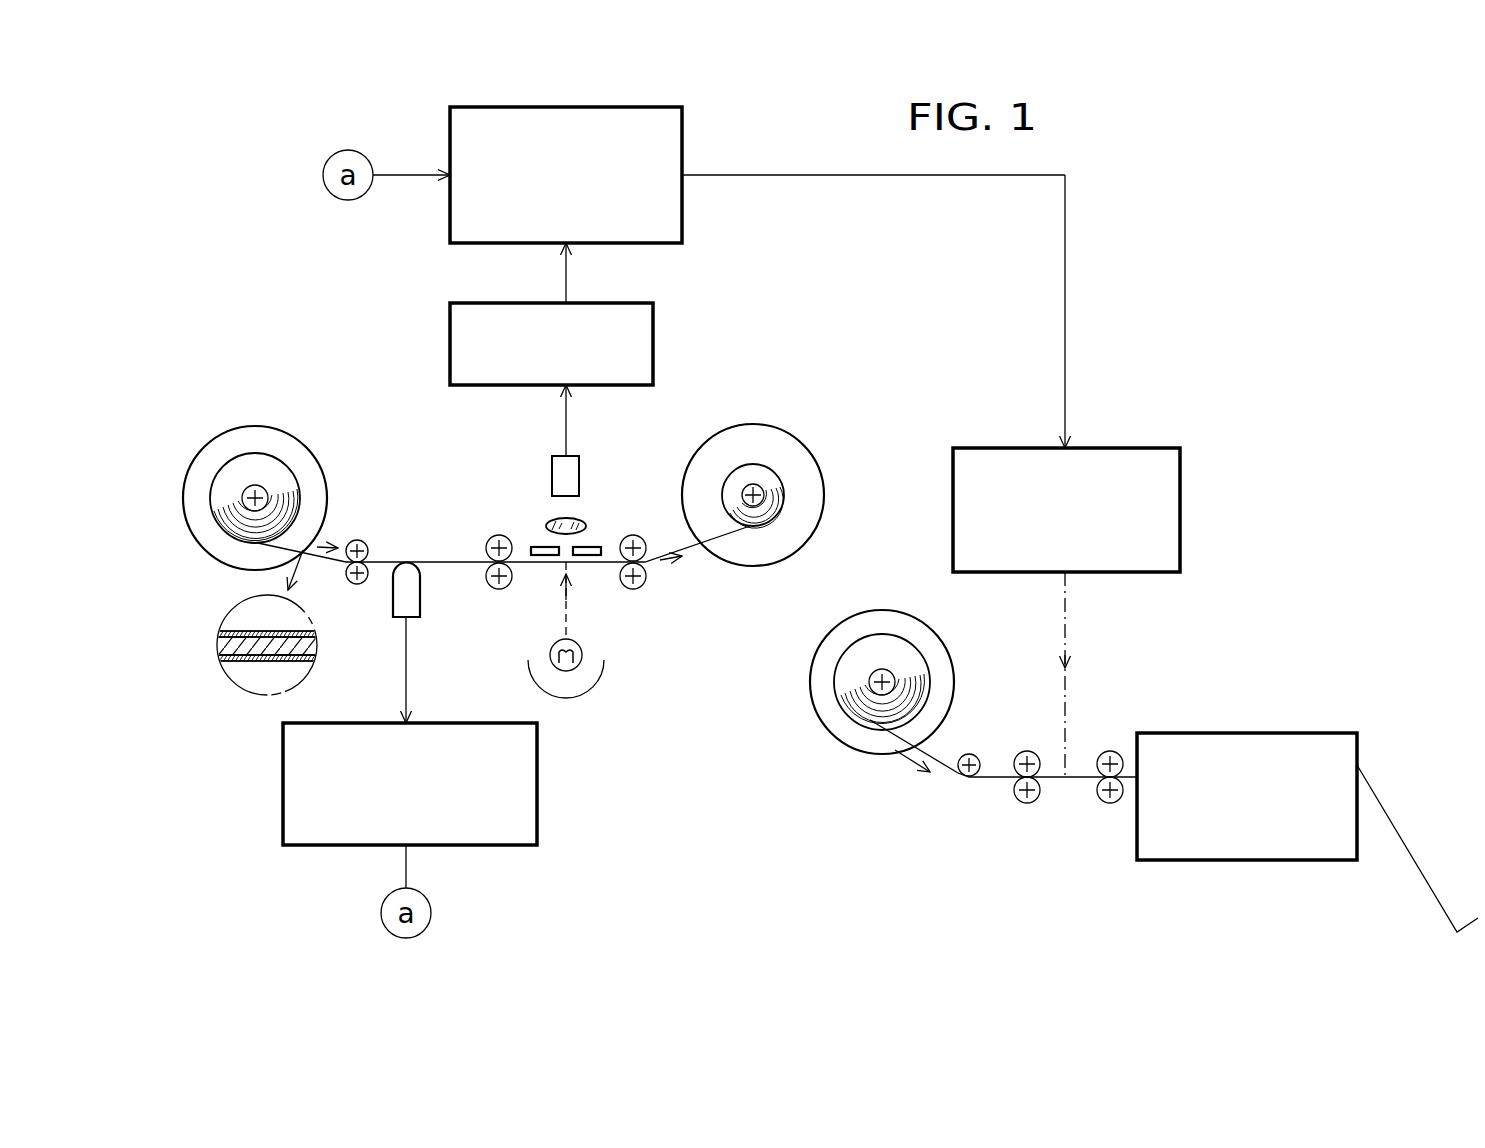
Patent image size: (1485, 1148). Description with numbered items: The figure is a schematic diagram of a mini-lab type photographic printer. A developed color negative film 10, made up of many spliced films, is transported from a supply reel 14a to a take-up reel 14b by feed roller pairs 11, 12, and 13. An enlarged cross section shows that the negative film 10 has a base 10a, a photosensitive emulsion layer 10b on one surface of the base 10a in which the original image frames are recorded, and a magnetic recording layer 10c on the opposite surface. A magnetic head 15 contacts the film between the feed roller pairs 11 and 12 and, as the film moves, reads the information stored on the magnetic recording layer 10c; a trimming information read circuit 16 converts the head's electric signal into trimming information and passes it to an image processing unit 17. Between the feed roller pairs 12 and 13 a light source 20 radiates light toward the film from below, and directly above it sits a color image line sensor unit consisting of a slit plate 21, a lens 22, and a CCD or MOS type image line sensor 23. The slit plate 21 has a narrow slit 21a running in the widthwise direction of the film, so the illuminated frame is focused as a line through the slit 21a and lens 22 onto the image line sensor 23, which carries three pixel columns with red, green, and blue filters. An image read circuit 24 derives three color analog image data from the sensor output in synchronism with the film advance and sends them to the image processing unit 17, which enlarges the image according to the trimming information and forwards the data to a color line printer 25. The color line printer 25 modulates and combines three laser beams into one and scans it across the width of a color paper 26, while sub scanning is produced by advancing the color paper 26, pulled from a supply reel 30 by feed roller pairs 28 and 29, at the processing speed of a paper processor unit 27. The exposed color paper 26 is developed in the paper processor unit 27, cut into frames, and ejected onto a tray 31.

The color negative film 10 is at (432, 562).
The base 10a is at (273, 645).
The photosensitive emulsion layer 10b is at (253, 637).
The magnetic recording layer 10c is at (252, 661).
The feed roller pair 11 is at (357, 540).
The feed roller pair 12 is at (499, 535).
The feed roller pair 13 is at (640, 588).
The supply reel 14a is at (258, 437).
The take-up reel 14b is at (760, 442).
The magnetic head 15 is at (393, 605).
The trimming information read circuit 16 is at (537, 785).
The image processing unit 17 is at (682, 137).
The light source 20 is at (582, 660).
The slit plate 21 is at (540, 547).
The slit 21a is at (560, 563).
The lens 22 is at (586, 521).
The image line sensor 23 is at (579, 476).
The image read circuit 24 is at (653, 345).
The color line printer 25 is at (1130, 448).
The color paper 26 is at (993, 778).
The paper processor unit 27 is at (1238, 733).
The feed roller pair 28 is at (1027, 750).
The feed roller pair 29 is at (1111, 750).
The supply reel 30 is at (882, 618).
The tray 31 is at (1410, 850).